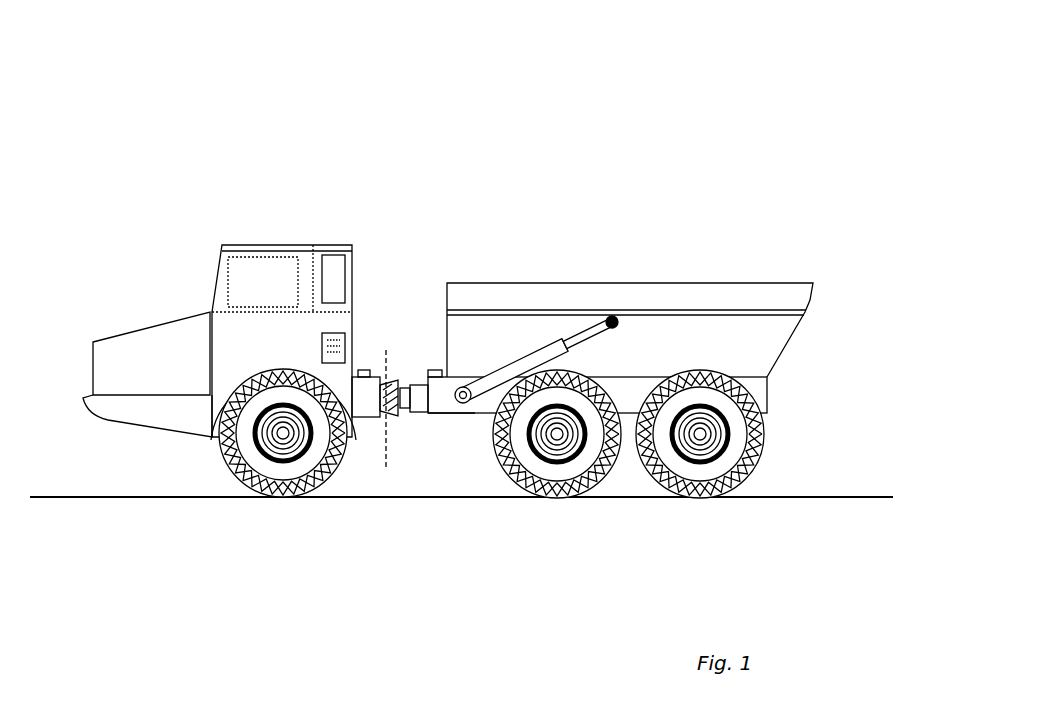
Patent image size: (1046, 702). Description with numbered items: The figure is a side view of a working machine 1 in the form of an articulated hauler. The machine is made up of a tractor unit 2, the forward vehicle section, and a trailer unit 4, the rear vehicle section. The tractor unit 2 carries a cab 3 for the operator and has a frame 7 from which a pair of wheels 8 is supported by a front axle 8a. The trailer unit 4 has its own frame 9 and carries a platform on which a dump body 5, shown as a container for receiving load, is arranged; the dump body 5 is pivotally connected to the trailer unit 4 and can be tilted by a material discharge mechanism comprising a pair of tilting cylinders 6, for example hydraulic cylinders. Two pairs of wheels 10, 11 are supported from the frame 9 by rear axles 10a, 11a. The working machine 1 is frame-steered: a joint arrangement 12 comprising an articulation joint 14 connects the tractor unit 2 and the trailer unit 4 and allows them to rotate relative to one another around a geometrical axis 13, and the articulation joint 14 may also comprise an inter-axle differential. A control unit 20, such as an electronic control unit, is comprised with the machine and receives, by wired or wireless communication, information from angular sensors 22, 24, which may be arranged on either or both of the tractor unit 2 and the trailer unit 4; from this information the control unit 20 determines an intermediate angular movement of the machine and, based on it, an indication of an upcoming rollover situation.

The working machine 1 is at (567, 89).
The tractor unit 2 is at (177, 246).
The cab 3 is at (282, 247).
The trailer unit 4 is at (672, 268).
The dump body 5 is at (537, 297).
The tilting cylinders 6 is at (502, 370).
The frame 7 is at (175, 420).
The wheels 8 is at (288, 470).
The front axle 8a is at (283, 433).
The frame 9 is at (470, 407).
The wheels 10 is at (577, 467).
The rear axle 10a is at (557, 434).
The wheels 11 is at (722, 467).
The rear axle 11a is at (700, 434).
The joint arrangement 12 is at (402, 383).
The geometrical axis 13 is at (386, 462).
The articulation joint 14 is at (405, 407).
The control unit 20 is at (333, 333).
The angular sensor 22 is at (362, 368).
The angular sensor 24 is at (443, 414).